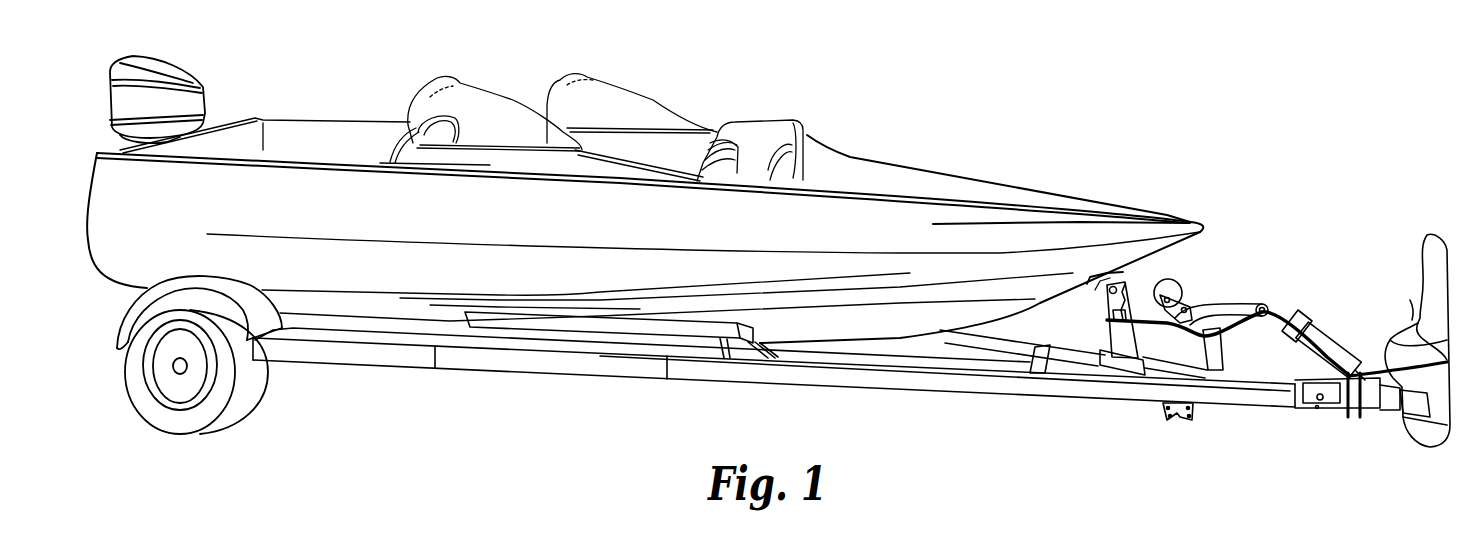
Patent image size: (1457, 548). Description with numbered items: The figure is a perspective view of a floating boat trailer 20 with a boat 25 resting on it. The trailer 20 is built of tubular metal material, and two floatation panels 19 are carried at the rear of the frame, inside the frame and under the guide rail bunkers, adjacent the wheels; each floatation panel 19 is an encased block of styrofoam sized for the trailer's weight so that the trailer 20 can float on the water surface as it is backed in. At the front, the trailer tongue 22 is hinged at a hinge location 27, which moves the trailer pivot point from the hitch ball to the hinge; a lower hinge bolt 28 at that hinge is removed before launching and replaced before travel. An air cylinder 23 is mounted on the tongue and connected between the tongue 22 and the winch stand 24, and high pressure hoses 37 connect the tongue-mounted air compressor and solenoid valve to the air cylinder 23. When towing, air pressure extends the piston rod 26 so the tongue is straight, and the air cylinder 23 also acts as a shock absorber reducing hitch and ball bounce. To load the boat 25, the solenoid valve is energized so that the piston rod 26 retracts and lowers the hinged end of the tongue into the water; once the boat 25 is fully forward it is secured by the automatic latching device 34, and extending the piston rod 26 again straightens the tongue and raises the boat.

The floatation panel 19 is at (300, 307).
The floating boat trailer 20 is at (1318, 275).
The trailer tongue 22 is at (1150, 395).
The air cylinder 23 is at (1332, 342).
The winch stand 24 is at (1233, 282).
The boat 25 is at (1172, 232).
The piston rod 26 is at (1276, 322).
The hinge location 27 is at (1296, 422).
The lower hinge bolt 28 is at (1325, 412).
The automatic latching device 34 is at (1100, 290).
The high pressure hoses 37 is at (1268, 318).